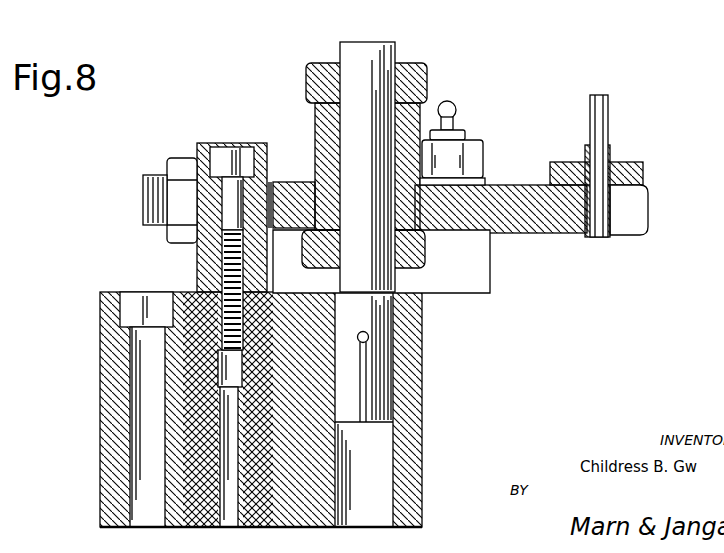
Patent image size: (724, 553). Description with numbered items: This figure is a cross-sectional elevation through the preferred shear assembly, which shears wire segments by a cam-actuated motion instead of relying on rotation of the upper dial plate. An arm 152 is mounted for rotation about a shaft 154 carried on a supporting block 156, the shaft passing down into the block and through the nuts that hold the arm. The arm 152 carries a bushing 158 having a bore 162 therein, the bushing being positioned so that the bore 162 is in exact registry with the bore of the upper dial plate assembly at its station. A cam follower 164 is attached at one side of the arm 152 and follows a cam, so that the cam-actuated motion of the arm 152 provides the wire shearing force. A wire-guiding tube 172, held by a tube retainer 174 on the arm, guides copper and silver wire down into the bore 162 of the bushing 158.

The arm 152 is at (527, 233).
The shaft 154 is at (365, 42).
The supporting block 156 is at (423, 400).
The bushing 158 is at (610, 237).
The bore 162 is at (597, 237).
The cam follower 164 is at (457, 296).
The wire-guiding tube 172 is at (608, 118).
The tube retainer 174 is at (643, 178).